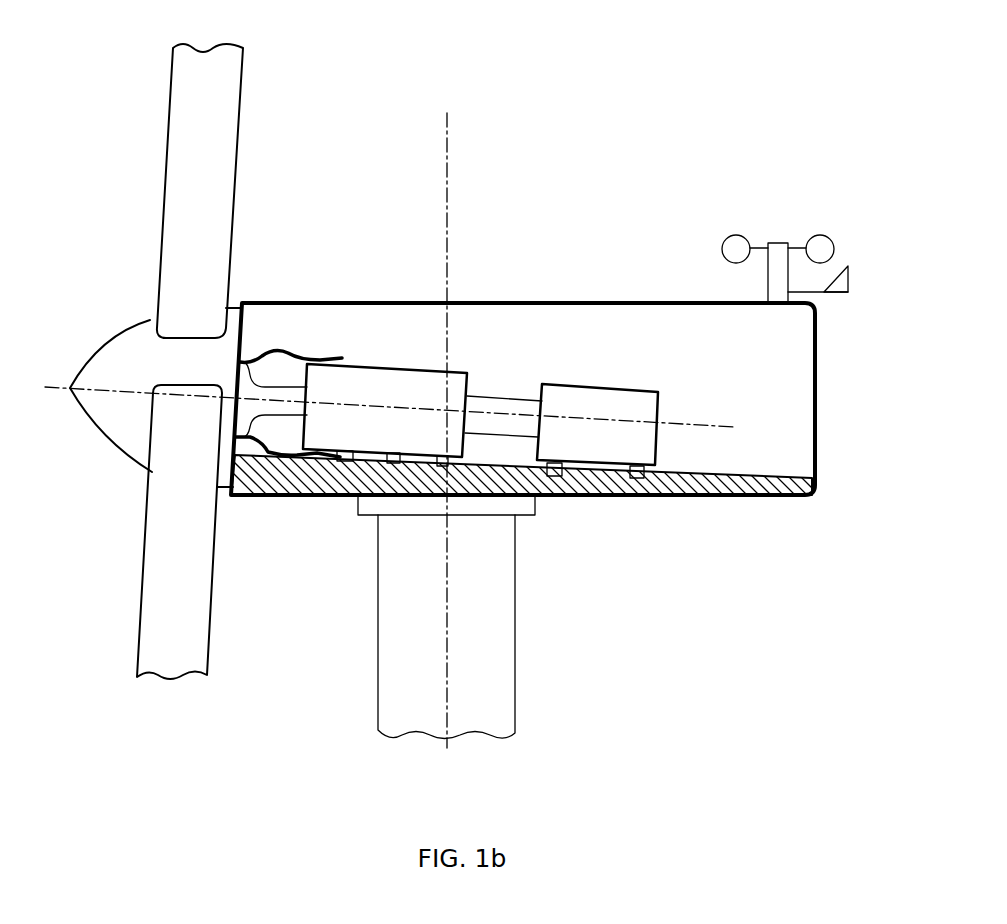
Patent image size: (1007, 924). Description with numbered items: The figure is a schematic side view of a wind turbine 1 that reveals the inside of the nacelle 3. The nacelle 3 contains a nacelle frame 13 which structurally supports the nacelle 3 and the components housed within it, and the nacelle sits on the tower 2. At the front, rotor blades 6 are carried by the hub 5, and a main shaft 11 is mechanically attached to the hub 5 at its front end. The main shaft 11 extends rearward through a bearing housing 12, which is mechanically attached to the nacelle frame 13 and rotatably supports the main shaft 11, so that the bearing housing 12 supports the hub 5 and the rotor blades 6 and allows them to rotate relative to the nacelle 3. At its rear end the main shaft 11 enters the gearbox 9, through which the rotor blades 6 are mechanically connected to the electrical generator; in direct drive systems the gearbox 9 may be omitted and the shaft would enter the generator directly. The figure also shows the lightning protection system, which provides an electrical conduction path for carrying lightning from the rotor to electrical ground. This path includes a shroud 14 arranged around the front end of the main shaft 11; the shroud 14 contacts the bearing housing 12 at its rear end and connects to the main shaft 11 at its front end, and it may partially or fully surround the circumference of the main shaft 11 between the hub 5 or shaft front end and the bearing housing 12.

The wind turbine 1 is at (452, 396).
The tower 2 is at (378, 642).
The nacelle 3 is at (345, 300).
The hub 5 is at (118, 340).
The rotor blades 6 is at (168, 163).
The gearbox 9 is at (590, 384).
The main shaft 11 is at (263, 385).
The bearing housing 12 is at (380, 364).
The nacelle frame 13 is at (308, 476).
The shroud 14 is at (297, 354).